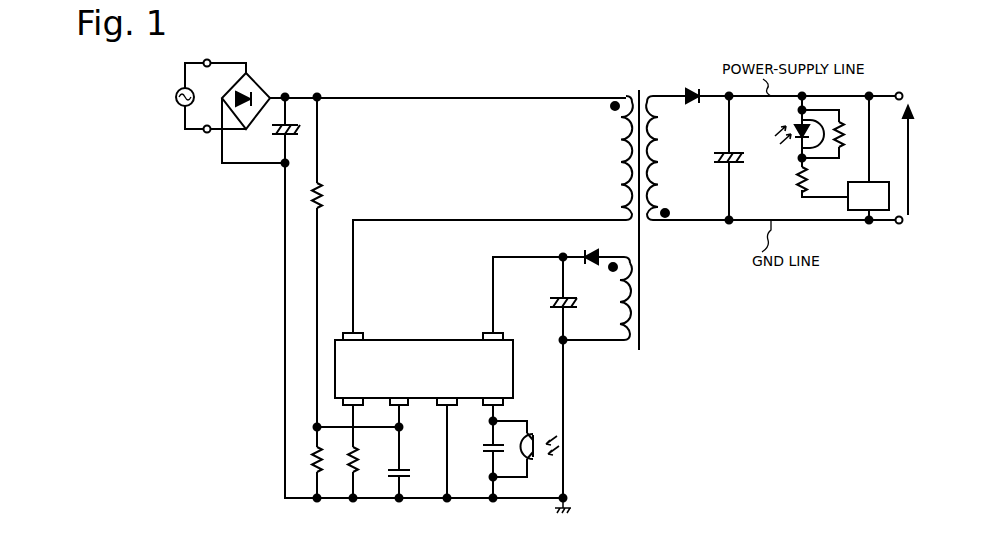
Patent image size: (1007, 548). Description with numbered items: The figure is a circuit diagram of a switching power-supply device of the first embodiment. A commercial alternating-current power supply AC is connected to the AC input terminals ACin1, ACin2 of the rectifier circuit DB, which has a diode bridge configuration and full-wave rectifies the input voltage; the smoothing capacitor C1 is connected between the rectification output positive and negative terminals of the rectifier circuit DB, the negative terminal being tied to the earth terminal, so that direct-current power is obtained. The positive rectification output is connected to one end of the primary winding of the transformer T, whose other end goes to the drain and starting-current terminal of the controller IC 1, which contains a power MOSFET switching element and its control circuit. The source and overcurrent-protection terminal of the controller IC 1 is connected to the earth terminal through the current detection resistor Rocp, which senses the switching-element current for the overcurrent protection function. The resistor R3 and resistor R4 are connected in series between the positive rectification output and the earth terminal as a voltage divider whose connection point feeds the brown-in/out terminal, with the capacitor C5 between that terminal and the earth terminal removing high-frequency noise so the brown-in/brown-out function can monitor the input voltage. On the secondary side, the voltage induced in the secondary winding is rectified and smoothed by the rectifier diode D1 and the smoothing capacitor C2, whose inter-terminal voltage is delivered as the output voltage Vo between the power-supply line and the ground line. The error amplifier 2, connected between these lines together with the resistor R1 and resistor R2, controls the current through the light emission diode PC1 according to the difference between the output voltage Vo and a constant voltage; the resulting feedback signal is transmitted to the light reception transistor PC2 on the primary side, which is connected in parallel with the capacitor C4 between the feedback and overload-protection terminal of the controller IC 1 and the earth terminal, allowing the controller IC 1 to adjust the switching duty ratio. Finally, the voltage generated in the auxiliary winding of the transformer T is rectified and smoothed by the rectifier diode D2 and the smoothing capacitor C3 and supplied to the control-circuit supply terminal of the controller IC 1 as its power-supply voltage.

The controller IC 1 is at (443, 340).
The error amplifier 2 is at (873, 182).
The transformer T is at (638, 213).
The rectifier diode D1 is at (694, 87).
The rectifier diode D2 is at (593, 250).
The rectifier circuit DB is at (249, 99).
The smoothing capacitor C1 is at (282, 129).
The smoothing capacitor C2 is at (724, 155).
The smoothing capacitor C3 is at (562, 301).
The capacitor C4 is at (486, 445).
The capacitor C5 is at (404, 469).
The resistor R1 is at (848, 134).
The resistor R2 is at (811, 179).
The resistor R3 is at (326, 195).
The resistor R4 is at (326, 458).
The current detection resistor Rocp is at (367, 451).
The light emission diode PC1 is at (793, 128).
The light reception transistor PC2 is at (541, 454).
The commercial alternating-current power supply AC is at (172, 97).
The AC input terminal ACin1 is at (204, 56).
The AC input terminal ACin2 is at (199, 138).
The output voltage Vo is at (918, 160).